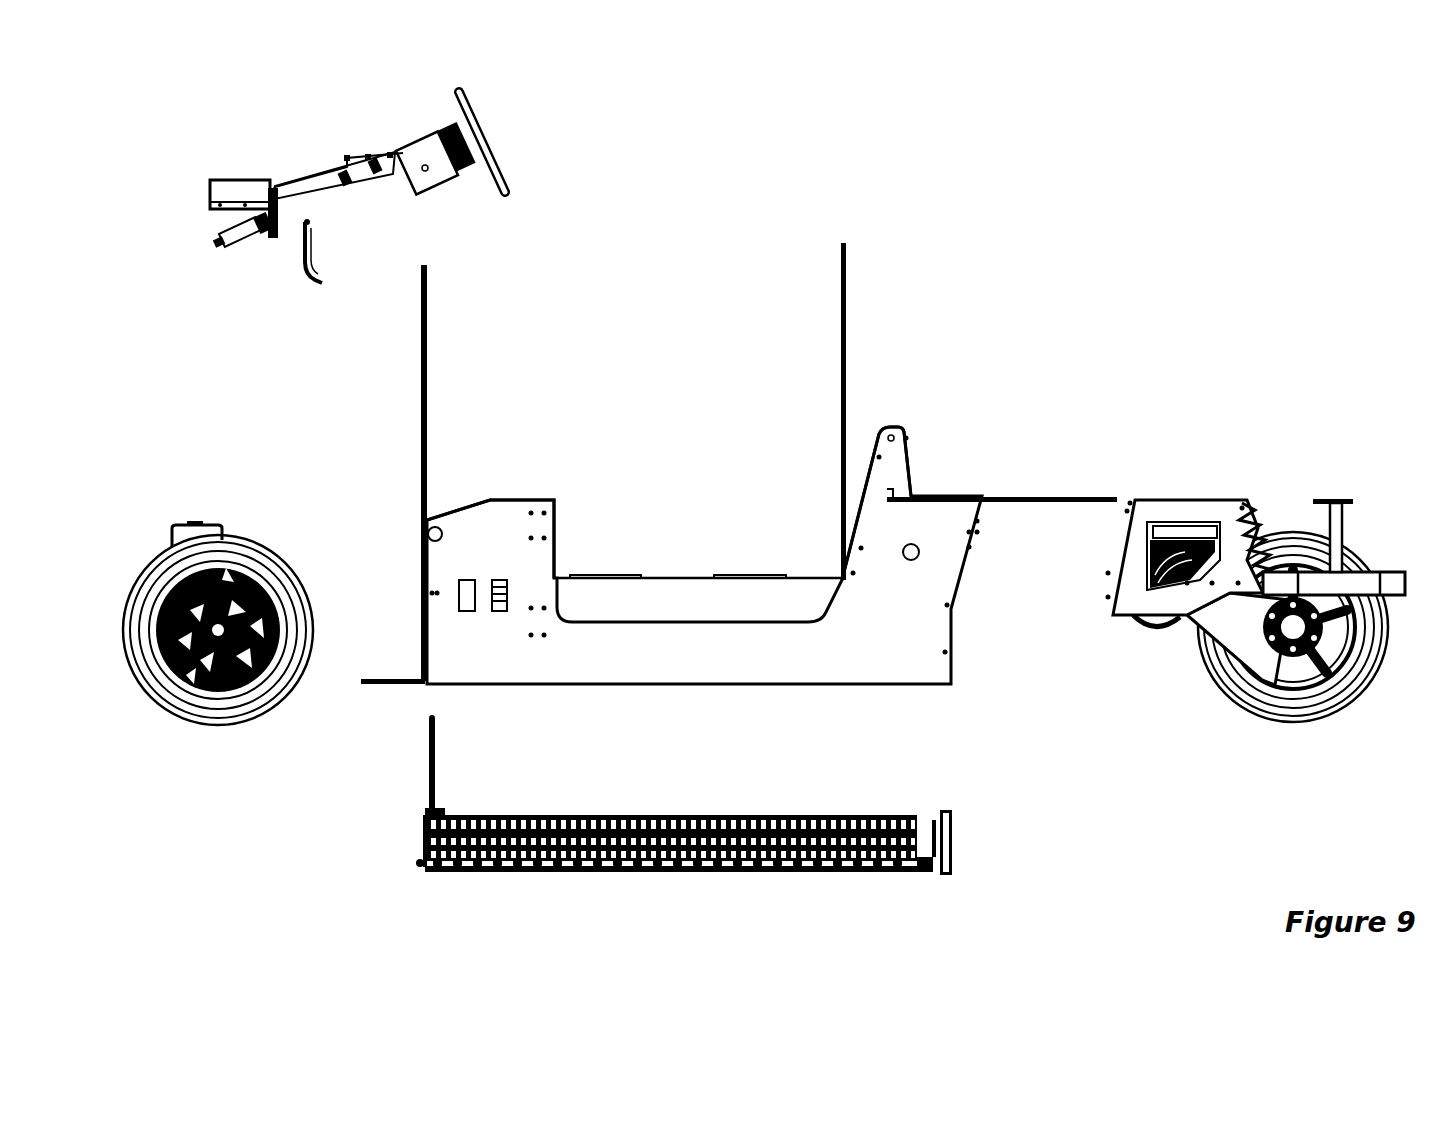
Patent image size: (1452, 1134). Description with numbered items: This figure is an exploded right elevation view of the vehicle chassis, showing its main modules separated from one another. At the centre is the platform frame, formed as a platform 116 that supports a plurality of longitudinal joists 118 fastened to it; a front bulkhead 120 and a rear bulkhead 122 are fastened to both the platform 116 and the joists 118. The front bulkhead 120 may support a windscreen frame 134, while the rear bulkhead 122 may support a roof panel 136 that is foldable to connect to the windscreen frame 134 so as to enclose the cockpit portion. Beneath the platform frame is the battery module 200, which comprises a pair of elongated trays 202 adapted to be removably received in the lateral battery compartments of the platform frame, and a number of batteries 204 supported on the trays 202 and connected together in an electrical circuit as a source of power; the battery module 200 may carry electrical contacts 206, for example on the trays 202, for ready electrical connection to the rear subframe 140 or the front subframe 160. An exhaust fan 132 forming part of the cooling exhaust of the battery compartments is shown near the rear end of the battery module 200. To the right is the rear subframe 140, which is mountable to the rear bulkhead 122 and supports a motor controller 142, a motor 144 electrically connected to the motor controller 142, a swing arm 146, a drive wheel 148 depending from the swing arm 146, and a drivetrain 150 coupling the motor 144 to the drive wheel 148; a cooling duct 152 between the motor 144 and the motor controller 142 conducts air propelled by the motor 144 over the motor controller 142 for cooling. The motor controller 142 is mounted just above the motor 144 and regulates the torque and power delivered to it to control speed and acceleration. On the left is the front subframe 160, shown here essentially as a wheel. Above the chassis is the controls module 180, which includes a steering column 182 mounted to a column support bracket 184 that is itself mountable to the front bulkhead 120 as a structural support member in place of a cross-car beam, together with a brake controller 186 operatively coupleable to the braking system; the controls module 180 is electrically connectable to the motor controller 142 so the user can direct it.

The platform 116 is at (900, 710).
The longitudinal joists 118 is at (699, 621).
The front bulkhead 120 is at (470, 480).
The rear bulkhead 122 is at (932, 478).
The exhaust fan 132 is at (953, 837).
The windscreen frame 134 is at (438, 387).
The roof panel 136 is at (865, 293).
The rear subframe 140 is at (1231, 518).
The motor controller 142 is at (1123, 525).
The motor 144 is at (1127, 637).
The swing arm 146 is at (1272, 515).
The drive wheel 148 is at (1370, 685).
The drivetrain 150 is at (1225, 620).
The cooling duct 152 is at (1152, 533).
The front subframe 160 is at (225, 505).
The controls module 180 is at (490, 214).
The steering column 182 is at (395, 193).
The column support bracket 184 is at (312, 165).
The brake controller 186 is at (308, 296).
The battery module 200 is at (606, 840).
The elongated trays 202 is at (875, 888).
The batteries 204 is at (717, 797).
The electrical contacts 206 is at (407, 870).